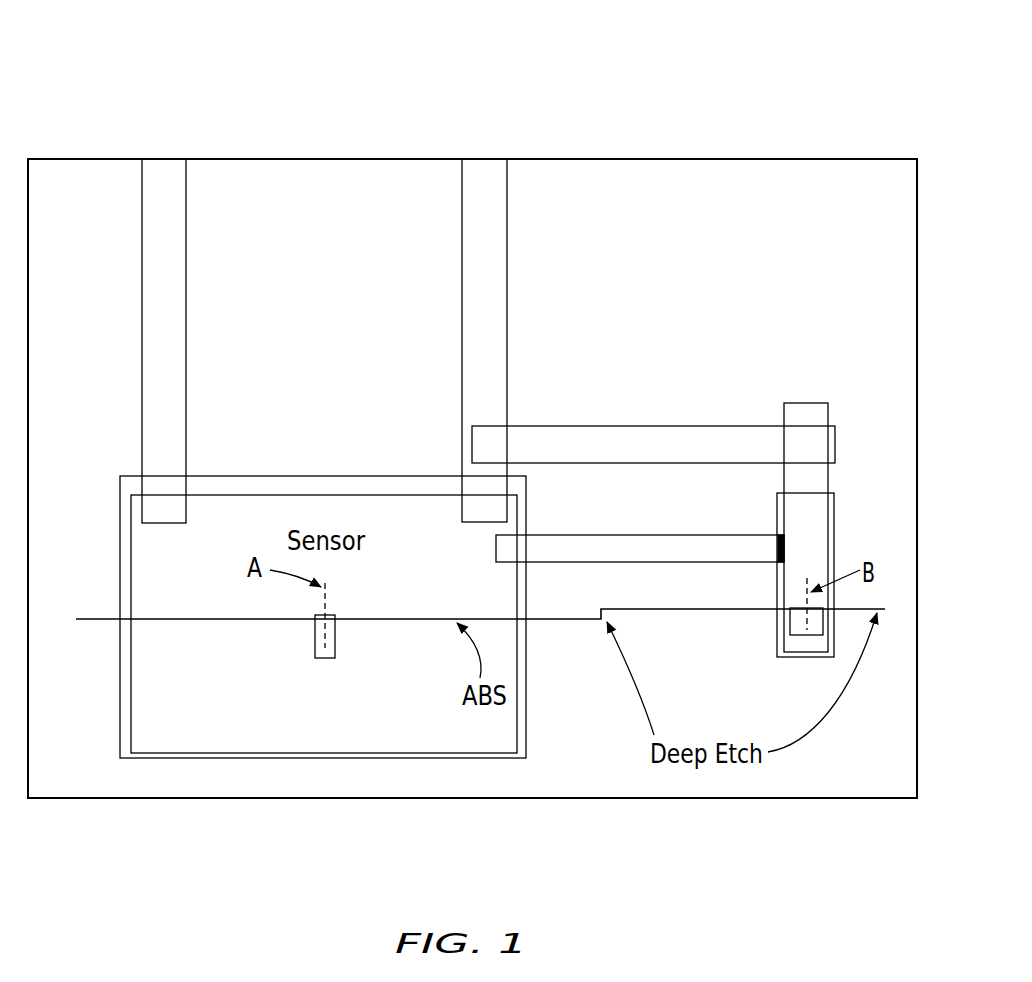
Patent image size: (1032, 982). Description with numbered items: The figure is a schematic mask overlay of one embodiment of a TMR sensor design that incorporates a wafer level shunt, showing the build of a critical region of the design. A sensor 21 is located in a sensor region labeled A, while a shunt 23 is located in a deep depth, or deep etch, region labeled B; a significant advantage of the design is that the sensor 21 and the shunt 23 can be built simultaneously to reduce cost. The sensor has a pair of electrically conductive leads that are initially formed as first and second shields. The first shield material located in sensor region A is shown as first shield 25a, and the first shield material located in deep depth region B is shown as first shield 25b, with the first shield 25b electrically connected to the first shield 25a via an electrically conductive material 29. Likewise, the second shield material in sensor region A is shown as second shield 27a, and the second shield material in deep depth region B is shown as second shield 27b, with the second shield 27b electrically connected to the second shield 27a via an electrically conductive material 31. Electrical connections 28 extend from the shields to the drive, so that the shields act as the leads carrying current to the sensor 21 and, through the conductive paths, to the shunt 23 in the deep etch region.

The sensor 21 is at (338, 641).
The shunt 23 is at (789, 613).
The first shield material in sensor region A 25a is at (257, 492).
The first shield material in deep depth region B 25b is at (839, 550).
The second shield material in sensor region A 27a is at (119, 472).
The second shield material in deep depth region B 27b is at (799, 401).
The electrical connections 28 is at (165, 172).
The electrically conductive material 29 is at (653, 533).
The electrically conductive material 31 is at (580, 424).